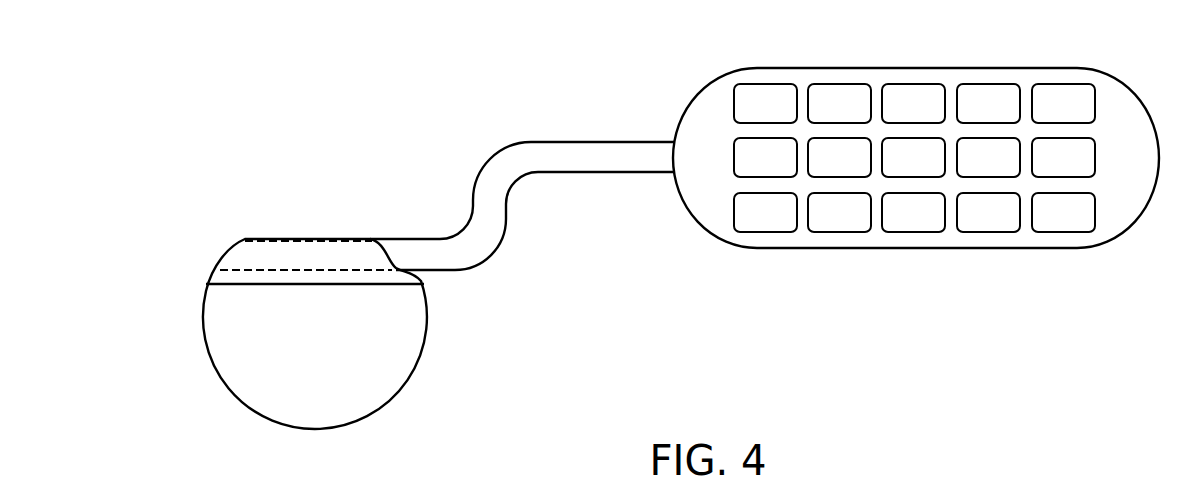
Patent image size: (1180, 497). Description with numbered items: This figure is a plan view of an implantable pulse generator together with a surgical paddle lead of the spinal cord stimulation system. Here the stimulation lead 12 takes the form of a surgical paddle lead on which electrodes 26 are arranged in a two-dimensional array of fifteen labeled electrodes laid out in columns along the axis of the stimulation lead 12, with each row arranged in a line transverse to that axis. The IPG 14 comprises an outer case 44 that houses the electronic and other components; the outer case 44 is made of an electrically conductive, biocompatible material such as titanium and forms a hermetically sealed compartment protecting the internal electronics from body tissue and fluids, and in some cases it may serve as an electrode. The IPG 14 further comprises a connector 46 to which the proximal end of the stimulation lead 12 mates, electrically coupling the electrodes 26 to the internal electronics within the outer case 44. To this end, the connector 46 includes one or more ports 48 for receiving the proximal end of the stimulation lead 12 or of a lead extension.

The stimulation lead 12 is at (530, 140).
The implantable pulse generator 14 is at (323, 298).
The electrodes 26 is at (847, 83).
The outer case 44 is at (423, 340).
The connector 46 is at (320, 239).
The ports 48 is at (297, 254).